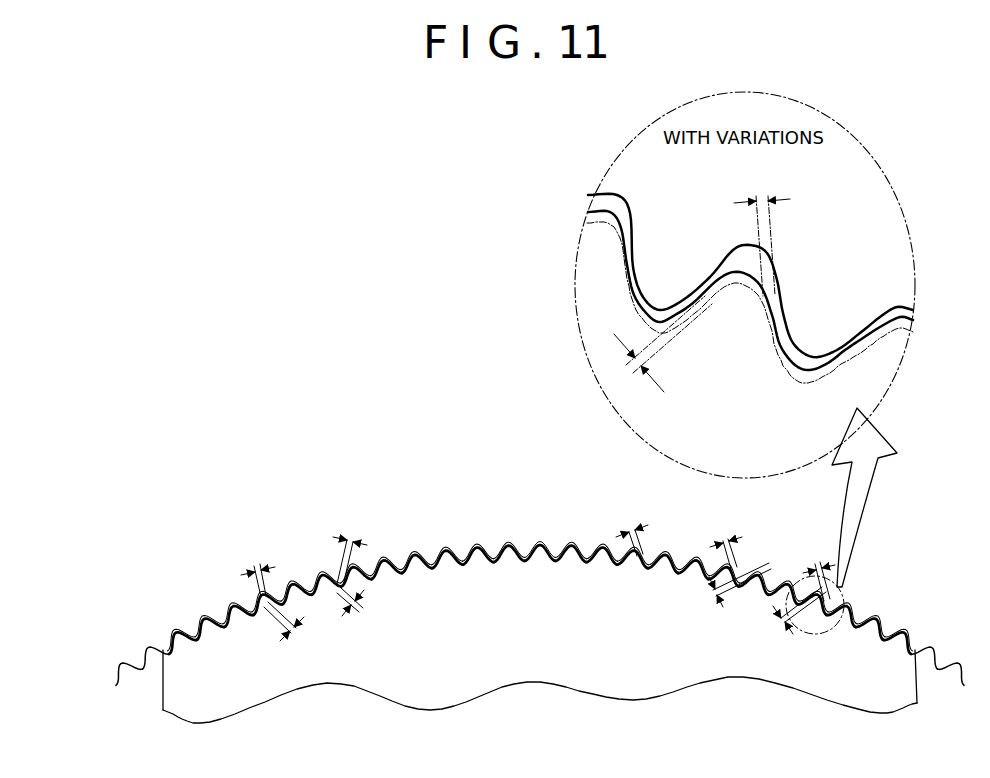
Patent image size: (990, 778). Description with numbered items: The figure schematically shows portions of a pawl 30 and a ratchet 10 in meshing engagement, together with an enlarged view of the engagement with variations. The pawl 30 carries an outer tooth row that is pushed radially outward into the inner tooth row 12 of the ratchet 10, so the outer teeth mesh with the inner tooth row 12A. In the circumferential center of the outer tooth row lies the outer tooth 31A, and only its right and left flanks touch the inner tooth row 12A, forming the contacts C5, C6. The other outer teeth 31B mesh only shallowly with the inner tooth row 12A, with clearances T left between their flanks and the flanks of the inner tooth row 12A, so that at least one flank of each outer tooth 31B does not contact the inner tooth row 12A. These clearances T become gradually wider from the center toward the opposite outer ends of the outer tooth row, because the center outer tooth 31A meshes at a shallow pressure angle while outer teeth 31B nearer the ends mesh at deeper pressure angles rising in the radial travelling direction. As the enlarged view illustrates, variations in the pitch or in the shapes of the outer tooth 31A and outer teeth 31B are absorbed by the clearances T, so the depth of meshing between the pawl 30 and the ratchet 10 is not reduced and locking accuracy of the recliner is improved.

The ratchet 10 is at (541, 431).
The inner tooth row 12 is at (399, 562).
The inner tooth row 12A is at (243, 625).
The pawl 30 is at (845, 644).
The outer tooth 31A is at (538, 542).
The outer teeth 31B is at (406, 553).
The contact C5 is at (526, 554).
The contact C6 is at (550, 554).
The clearance T is at (538, 413).